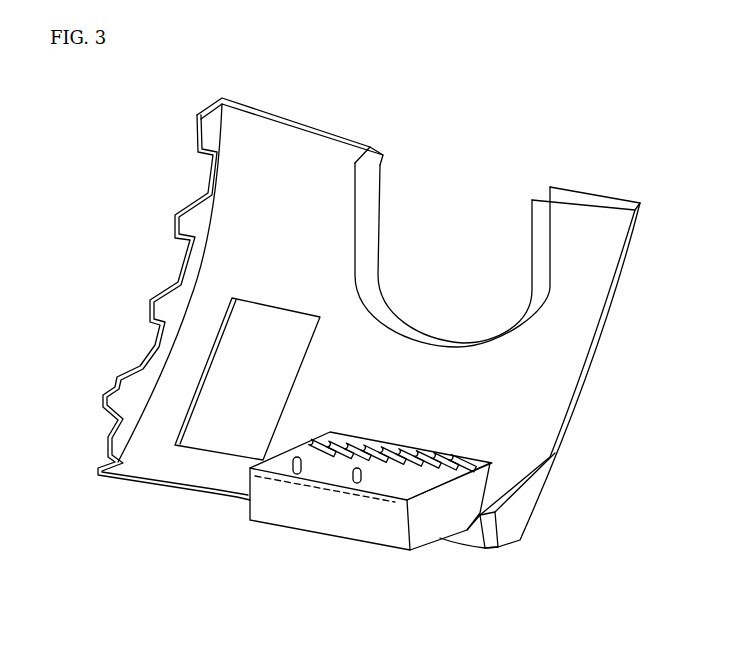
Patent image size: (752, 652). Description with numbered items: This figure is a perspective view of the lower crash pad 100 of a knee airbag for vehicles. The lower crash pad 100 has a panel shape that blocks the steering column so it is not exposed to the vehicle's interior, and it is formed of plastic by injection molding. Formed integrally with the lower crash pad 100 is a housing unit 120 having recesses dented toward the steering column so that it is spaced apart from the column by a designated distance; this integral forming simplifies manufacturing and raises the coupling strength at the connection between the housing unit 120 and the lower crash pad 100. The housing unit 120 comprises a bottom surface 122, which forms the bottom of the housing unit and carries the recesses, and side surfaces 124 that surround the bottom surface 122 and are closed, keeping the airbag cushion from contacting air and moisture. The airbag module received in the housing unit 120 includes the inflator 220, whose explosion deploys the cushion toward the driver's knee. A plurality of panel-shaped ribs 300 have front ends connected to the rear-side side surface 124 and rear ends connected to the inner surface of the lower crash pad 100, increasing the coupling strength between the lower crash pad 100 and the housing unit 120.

The lower crash pad 100 is at (583, 442).
The housing unit 120 is at (373, 468).
The bottom surface 122 is at (313, 457).
The side surfaces 124 is at (433, 533).
The inflator 220 is at (293, 477).
The ribs 300 is at (467, 457).